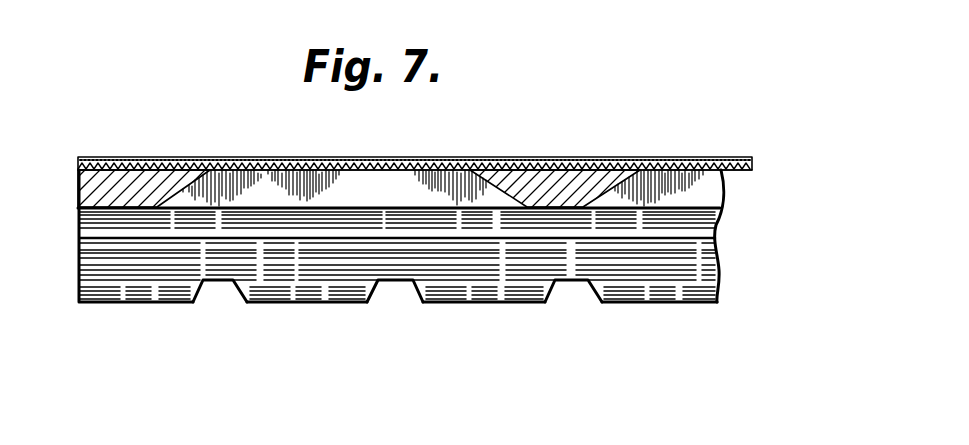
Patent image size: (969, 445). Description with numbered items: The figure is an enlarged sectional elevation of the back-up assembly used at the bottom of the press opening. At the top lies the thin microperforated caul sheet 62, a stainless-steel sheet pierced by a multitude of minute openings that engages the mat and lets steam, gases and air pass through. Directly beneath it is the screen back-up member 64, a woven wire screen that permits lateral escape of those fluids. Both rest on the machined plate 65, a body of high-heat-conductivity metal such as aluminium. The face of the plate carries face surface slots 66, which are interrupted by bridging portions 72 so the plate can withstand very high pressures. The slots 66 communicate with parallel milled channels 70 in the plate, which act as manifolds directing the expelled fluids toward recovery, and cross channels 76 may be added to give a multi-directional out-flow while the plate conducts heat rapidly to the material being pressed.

The microperforated caul sheet 62 is at (415, 160).
The screen back-up member 64 is at (248, 163).
The machined plate 65 is at (59, 264).
The face surface slot 66 is at (315, 192).
The milled channel 70 is at (697, 272).
The bridging portion 72 is at (121, 178).
The cross channel 76 is at (211, 292).